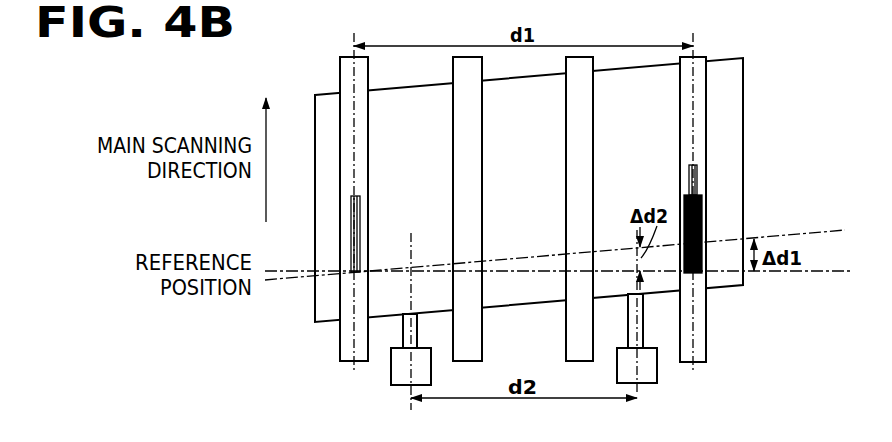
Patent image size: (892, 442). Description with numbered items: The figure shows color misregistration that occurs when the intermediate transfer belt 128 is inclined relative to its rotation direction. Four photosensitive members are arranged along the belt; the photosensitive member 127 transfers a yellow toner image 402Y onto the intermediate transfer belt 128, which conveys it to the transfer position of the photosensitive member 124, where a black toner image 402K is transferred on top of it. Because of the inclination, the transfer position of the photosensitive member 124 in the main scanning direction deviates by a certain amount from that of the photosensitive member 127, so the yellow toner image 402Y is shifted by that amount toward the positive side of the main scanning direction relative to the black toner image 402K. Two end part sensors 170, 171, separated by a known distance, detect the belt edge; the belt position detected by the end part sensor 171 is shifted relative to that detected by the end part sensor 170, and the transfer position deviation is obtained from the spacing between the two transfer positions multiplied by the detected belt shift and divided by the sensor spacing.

The photosensitive member 127 is at (340, 73).
The intermediate transfer belt 128 is at (743, 73).
The photosensitive member 124 is at (680, 92).
The yellow toner image 402Y is at (689, 172).
The black toner image 402K is at (702, 200).
The end part sensor 170 is at (391, 378).
The end part sensor 171 is at (657, 378).